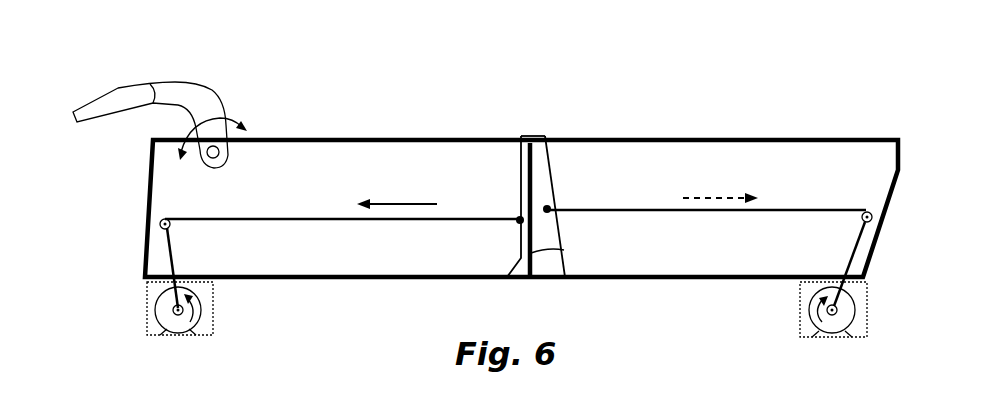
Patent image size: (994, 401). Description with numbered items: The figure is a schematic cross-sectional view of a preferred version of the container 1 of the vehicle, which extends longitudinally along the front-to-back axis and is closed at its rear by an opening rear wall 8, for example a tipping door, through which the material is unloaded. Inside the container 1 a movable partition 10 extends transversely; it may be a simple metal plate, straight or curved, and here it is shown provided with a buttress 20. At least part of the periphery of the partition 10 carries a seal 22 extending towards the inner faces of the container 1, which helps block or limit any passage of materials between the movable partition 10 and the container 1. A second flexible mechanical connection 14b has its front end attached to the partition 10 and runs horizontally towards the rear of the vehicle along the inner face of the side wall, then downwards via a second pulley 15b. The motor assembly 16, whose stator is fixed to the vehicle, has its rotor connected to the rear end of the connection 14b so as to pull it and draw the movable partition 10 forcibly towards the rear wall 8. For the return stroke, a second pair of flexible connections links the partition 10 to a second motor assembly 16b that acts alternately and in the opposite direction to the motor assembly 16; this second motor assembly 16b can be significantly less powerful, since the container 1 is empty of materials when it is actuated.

The container 1 is at (448, 116).
The opening rear wall 8 is at (118, 97).
The movable partition 10 is at (519, 181).
The second flexible mechanical connection 14b is at (313, 217).
The second pulley 15b is at (148, 220).
The motor assembly 16 is at (195, 308).
The second motor assembly 16b is at (848, 302).
The buttress 20 is at (545, 183).
The seal 22 is at (560, 250).